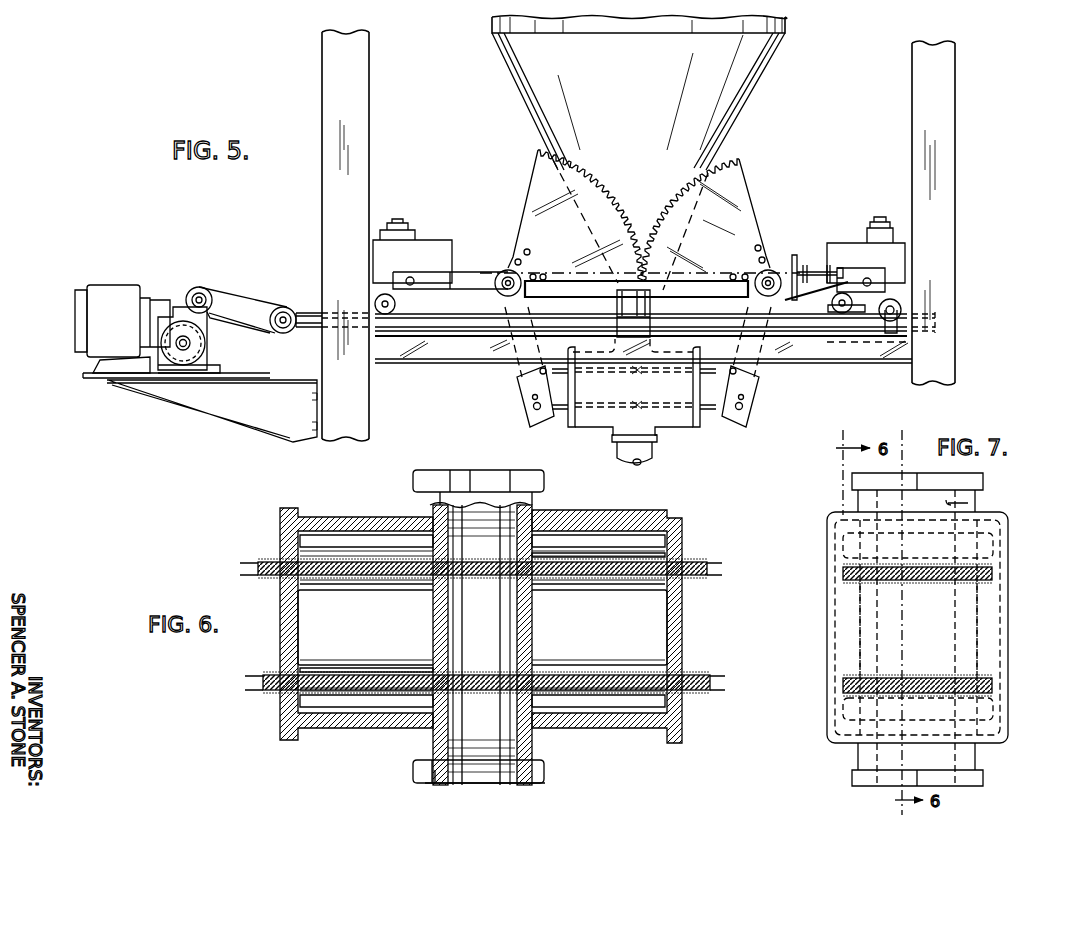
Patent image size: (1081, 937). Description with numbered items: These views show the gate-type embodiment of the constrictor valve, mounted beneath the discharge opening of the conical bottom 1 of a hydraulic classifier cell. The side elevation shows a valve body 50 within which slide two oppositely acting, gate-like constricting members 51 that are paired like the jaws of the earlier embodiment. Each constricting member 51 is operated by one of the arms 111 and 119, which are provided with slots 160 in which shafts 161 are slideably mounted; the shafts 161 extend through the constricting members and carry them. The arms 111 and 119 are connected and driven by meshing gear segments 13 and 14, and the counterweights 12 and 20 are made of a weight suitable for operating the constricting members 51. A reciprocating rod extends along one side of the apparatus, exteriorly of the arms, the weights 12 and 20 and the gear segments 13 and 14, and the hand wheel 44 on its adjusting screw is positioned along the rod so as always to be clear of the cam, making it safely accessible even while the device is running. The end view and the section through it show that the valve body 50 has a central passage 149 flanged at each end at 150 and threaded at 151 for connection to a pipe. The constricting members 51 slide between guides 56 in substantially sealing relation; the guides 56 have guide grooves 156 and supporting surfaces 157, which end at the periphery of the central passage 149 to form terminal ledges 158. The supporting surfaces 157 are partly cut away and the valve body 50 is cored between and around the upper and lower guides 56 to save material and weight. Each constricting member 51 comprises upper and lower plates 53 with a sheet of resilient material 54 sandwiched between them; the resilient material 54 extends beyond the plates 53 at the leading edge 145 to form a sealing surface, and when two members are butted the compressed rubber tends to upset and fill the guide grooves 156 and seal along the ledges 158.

In FIG. 5, the conical bottom 1 is at (523, 92).
In FIG. 5, the counterweight 12 is at (845, 247).
In FIG. 5, the gear segment 13 is at (535, 173).
In FIG. 5, the gear segment 14 is at (743, 187).
In FIG. 5, the counterweight 20 is at (427, 248).
In FIG. 5, the hand wheel 44 is at (743, 309).
In FIG. 5, the valve body 50 is at (636, 407).
In FIG. 6, the valve body 50 is at (356, 504).
In FIG. 5, the constricting member 51 is at (570, 372).
In FIG. 6, the constricting member 51 is at (267, 558).
In FIG. 6, the plate 53 is at (366, 564).
In FIG. 6, the sheet of resilient material 54 is at (256, 568).
In FIG. 6, the guide 56 is at (336, 552).
In FIG. 5, the arm 111 is at (887, 280).
In FIG. 5, the arm 119 is at (462, 277).
In FIG. 6, the leading edge 145 is at (483, 670).
In FIG. 7, the leading edge 145 is at (845, 638).
In FIG. 6, the central passage 149 is at (510, 635).
In FIG. 7, the central passage 149 is at (968, 503).
In FIG. 5, the flange 150 is at (633, 333).
In FIG. 6, the flange 150 is at (540, 486).
In FIG. 7, the flange 150 is at (983, 481).
In FIG. 6, the threaded portion 151 is at (452, 785).
In FIG. 6, the guide groove 156 is at (377, 670).
In FIG. 7, the guide groove 156 is at (850, 562).
In FIG. 6, the supporting surface 157 is at (610, 582).
In FIG. 7, the supporting surface 157 is at (975, 582).
In FIG. 6, the terminal ledge 158 is at (428, 673).
In FIG. 7, the terminal ledge 158 is at (955, 562).
In FIG. 5, the slot 160 is at (788, 379).
In FIG. 5, the shaft 161 is at (528, 422).